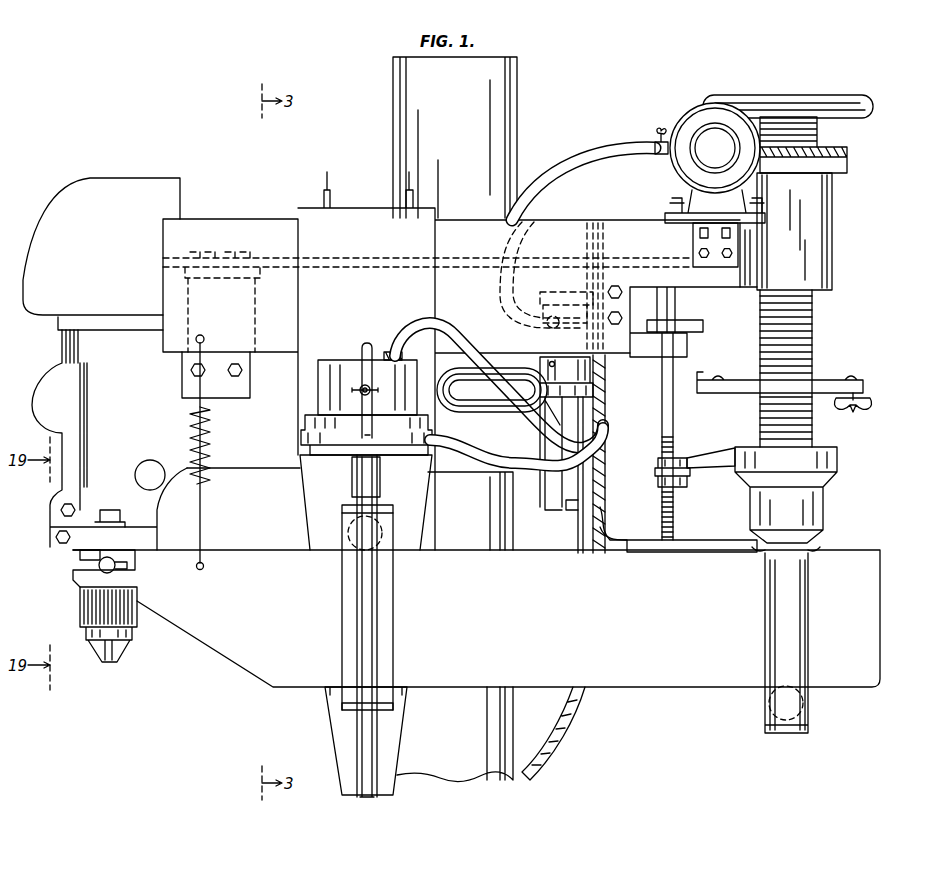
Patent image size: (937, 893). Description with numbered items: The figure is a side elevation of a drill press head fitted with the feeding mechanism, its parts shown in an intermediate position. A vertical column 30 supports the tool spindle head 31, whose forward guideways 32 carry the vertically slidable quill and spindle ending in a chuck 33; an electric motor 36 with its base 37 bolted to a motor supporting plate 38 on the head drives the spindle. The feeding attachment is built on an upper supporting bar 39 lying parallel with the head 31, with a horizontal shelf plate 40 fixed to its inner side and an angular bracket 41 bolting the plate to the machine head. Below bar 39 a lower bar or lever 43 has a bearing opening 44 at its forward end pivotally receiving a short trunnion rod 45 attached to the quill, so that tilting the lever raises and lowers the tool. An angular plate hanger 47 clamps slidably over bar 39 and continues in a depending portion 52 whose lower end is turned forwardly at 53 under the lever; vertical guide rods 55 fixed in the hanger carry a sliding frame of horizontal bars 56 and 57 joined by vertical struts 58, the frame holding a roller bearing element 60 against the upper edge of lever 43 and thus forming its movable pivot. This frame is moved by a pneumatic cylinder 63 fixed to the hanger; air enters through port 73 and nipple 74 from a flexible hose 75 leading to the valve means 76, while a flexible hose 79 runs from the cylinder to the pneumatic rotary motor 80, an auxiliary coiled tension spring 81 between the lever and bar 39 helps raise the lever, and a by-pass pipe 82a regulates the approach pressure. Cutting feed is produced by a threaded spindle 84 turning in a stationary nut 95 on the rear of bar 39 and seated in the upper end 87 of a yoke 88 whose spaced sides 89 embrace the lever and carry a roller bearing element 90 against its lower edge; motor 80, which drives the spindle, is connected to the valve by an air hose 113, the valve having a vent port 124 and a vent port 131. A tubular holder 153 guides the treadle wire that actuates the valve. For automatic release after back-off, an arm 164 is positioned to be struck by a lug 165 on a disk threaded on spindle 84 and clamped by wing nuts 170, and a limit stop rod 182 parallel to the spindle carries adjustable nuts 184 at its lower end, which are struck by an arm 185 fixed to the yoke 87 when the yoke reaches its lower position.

The vertical column 30 is at (415, 83).
The tool spindle head 31 is at (124, 171).
The guideways 32 is at (55, 422).
The chuck 33 is at (95, 648).
The electric motor 36 is at (645, 556).
The motor base 37 is at (590, 490).
The motor supporting plate 38 is at (546, 508).
The upper supporting bar 39 is at (236, 218).
The shelf plate 40 is at (166, 258).
The angular bracket 41 is at (182, 385).
The lower bar or lever 43 is at (250, 655).
The bearing opening 44 is at (116, 562).
The trunnion rod 45 is at (118, 572).
The angular plate hanger 47 is at (356, 240).
The depending portion 52 is at (305, 490).
The forwardly turned lower end 53 is at (393, 787).
The vertical guide rods 55 is at (357, 590).
The horizontal bar 56 is at (388, 505).
The horizontal bar 57 is at (398, 712).
The vertical struts 58 is at (390, 608).
The roller bearing element 60 is at (348, 533).
The cylinder 63 is at (318, 380).
The inlet port 73 is at (370, 358).
The nipple 74 is at (392, 355).
The flexible hose 75 is at (416, 318).
The valve means 76 is at (576, 262).
The flexible hose 79 is at (463, 462).
The pneumatic rotary motor 80 is at (682, 165).
The auxiliary coiled tension spring 81 is at (190, 428).
The by-pass pipe 82a is at (362, 344).
The threaded spindle 84 is at (812, 322).
The upper end of yoke 87 is at (826, 500).
The yoke 88 is at (759, 743).
The spaced sides 89 is at (765, 617).
The roller bearing element 90 is at (804, 706).
The stationary nut 95 is at (833, 222).
The air hose 113 is at (566, 186).
The vent port 124 is at (545, 338).
The vent port 131 is at (540, 374).
The tubular holder 153 is at (550, 752).
The arm 164 is at (688, 326).
The lug 165 is at (697, 376).
The wing nuts 170 is at (868, 402).
The limit stop rod 182 is at (665, 392).
The adjustable nuts 184 is at (658, 480).
The arm 185 is at (726, 452).